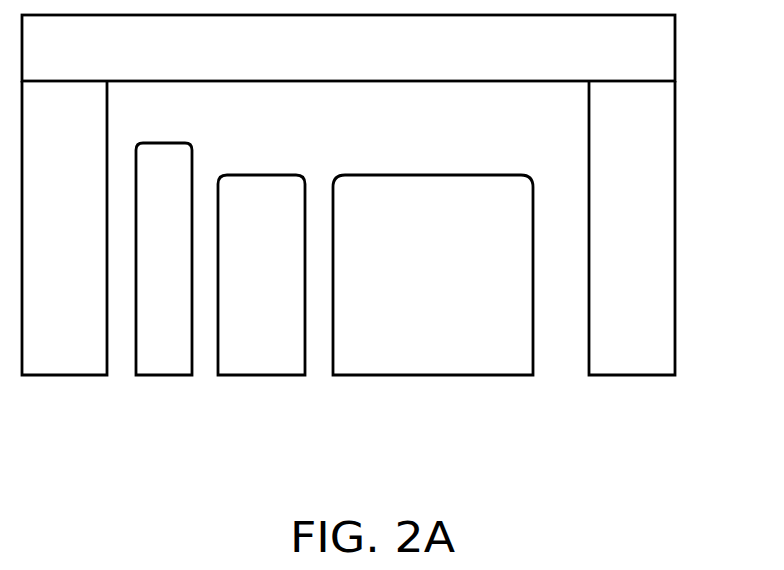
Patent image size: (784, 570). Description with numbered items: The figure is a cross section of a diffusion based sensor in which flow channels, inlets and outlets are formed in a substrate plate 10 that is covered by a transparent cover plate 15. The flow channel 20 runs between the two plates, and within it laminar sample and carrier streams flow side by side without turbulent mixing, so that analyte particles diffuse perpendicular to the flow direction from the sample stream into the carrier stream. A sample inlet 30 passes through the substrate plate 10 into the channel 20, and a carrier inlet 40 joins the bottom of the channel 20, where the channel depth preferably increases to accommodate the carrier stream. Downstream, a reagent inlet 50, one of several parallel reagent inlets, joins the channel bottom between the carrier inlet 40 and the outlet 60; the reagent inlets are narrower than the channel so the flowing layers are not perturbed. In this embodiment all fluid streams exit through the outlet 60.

The substrate plate 10 is at (676, 228).
The transparent cover plate 15 is at (676, 57).
The channel 20 is at (450, 148).
The sample inlet 30 is at (136, 355).
The carrier inlet 40 is at (218, 357).
The reagent inlet 50 is at (305, 353).
The outlet 60 is at (533, 352).